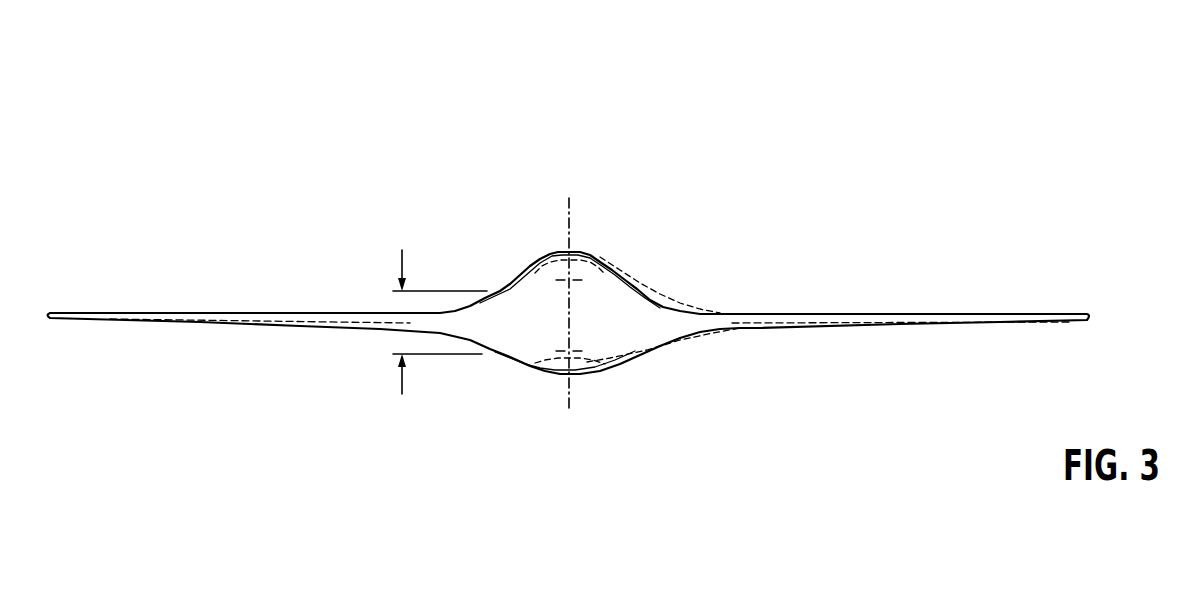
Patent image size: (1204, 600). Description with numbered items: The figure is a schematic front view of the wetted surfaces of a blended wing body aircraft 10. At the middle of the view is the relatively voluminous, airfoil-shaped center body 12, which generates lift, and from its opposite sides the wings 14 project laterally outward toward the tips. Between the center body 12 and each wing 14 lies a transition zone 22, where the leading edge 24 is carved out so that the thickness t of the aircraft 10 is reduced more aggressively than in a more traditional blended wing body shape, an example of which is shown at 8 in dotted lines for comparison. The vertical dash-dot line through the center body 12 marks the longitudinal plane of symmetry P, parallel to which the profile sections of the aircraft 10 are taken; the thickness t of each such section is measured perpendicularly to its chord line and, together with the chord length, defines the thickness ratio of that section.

The blended wing body aircraft 10 is at (349, 80).
The center body 12 is at (585, 252).
The wings 14 is at (787, 327).
The transition zone 22 is at (653, 313).
The leading edge 24 is at (903, 322).
The traditional blended wing body shape 8 is at (680, 305).
The longitudinal plane of symmetry P is at (571, 208).
The thickness t is at (440, 305).